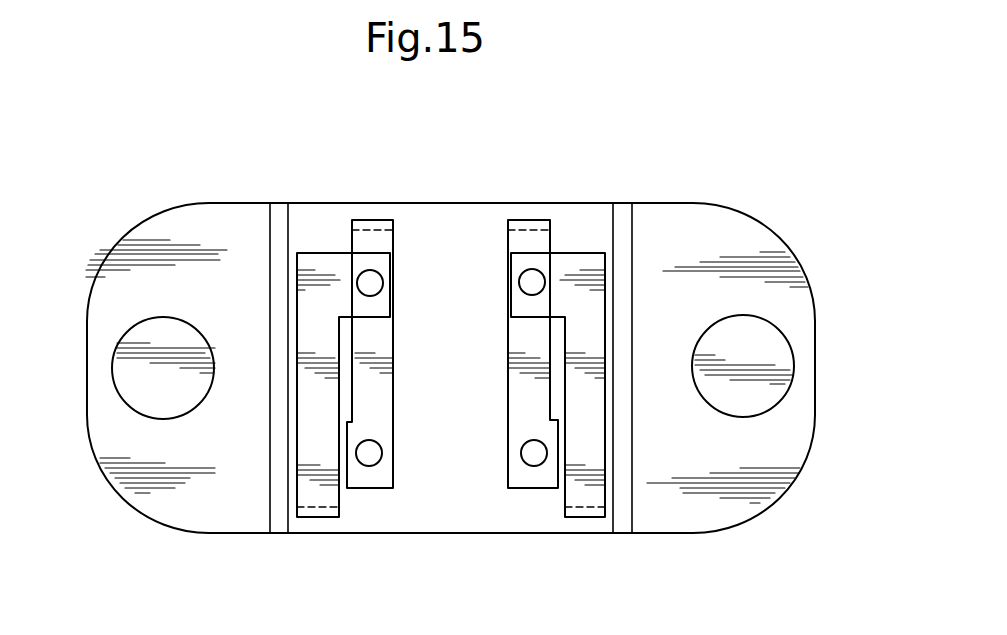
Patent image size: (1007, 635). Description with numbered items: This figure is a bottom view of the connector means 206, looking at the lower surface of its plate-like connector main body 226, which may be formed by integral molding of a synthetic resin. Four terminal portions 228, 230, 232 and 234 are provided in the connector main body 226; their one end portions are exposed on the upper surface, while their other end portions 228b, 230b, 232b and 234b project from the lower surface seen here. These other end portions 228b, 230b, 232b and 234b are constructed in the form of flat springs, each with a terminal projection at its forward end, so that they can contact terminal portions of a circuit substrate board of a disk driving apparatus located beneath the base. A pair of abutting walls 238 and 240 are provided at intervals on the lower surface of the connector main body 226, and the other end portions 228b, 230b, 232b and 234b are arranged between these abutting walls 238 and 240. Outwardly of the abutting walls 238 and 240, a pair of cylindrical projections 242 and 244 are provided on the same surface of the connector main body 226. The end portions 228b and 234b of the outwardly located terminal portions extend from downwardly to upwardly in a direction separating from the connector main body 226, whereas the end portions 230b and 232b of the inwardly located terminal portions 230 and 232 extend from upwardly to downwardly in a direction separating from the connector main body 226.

The connector means 206 is at (775, 217).
The connector main body 226 is at (152, 245).
The terminal portion 228 is at (254, 363).
The other end portion of terminal portion 228b is at (315, 267).
The terminal portion 230 is at (412, 410).
The other end portion of terminal portion 230b is at (420, 389).
The terminal portion 232 is at (490, 410).
The other end portion of terminal portion 232b is at (530, 480).
The terminal portion 234 is at (619, 426).
The other end portion of terminal portion 234b is at (597, 443).
The abutting wall 238 is at (271, 500).
The abutting wall 240 is at (625, 237).
The projection 242 is at (140, 415).
The projection 244 is at (783, 333).